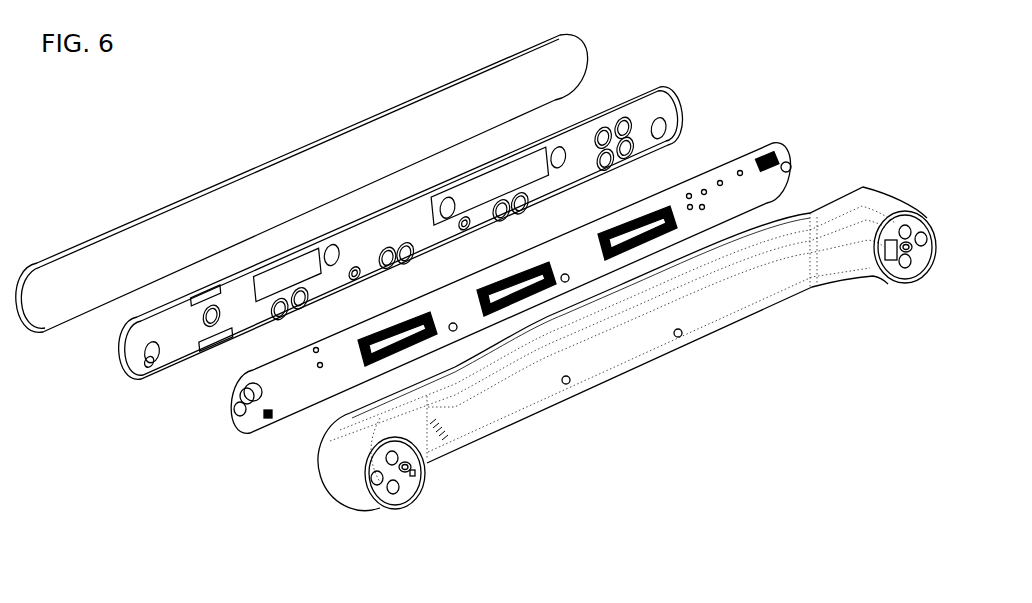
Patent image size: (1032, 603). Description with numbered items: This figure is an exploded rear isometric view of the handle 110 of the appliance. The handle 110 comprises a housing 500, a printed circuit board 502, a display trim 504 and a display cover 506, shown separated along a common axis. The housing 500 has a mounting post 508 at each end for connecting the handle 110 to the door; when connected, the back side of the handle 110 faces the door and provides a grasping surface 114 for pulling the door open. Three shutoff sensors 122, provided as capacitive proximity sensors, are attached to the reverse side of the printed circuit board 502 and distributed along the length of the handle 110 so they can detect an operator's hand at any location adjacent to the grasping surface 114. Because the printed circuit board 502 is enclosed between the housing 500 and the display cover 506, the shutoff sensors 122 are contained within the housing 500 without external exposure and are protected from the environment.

The handle 110 is at (750, 97).
The grasping surface 114 is at (613, 358).
The shutoff sensors 122 is at (413, 350).
The housing 500 is at (622, 322).
The printed circuit board 502 is at (782, 153).
The display trim 504 is at (663, 102).
The display cover 506 is at (575, 61).
The mounting post 508 is at (383, 497).